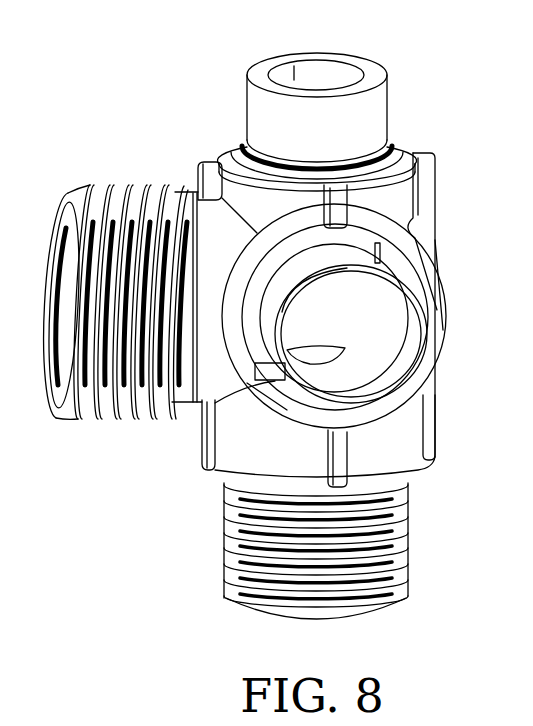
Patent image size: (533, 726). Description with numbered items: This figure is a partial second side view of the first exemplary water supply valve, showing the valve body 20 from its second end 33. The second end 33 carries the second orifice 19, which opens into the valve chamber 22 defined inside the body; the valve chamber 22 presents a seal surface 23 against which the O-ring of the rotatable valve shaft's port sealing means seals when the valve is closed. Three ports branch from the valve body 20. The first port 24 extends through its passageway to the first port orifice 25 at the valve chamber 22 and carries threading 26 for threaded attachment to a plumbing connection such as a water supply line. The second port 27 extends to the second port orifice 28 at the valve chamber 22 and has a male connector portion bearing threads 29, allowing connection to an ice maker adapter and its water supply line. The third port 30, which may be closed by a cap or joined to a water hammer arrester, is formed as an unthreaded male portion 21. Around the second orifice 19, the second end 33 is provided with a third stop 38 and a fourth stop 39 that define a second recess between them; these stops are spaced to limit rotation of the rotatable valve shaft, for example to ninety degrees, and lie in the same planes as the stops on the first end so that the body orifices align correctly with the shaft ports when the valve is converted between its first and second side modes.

The second orifice 19 is at (436, 400).
The valve body 20 is at (176, 114).
The unthreaded male portion 21 is at (370, 118).
The valve chamber 22 is at (320, 392).
The seal surface 23 is at (347, 290).
The first port 24 is at (368, 607).
The first port orifice 25 is at (318, 348).
The threading 26 is at (230, 547).
The second port 27 is at (66, 398).
The second port orifice 28 is at (62, 342).
The threads 29 is at (114, 190).
The third port 30 is at (372, 72).
The second end 33 is at (287, 397).
The third stop 38 is at (377, 245).
The fourth stop 39 is at (252, 306).